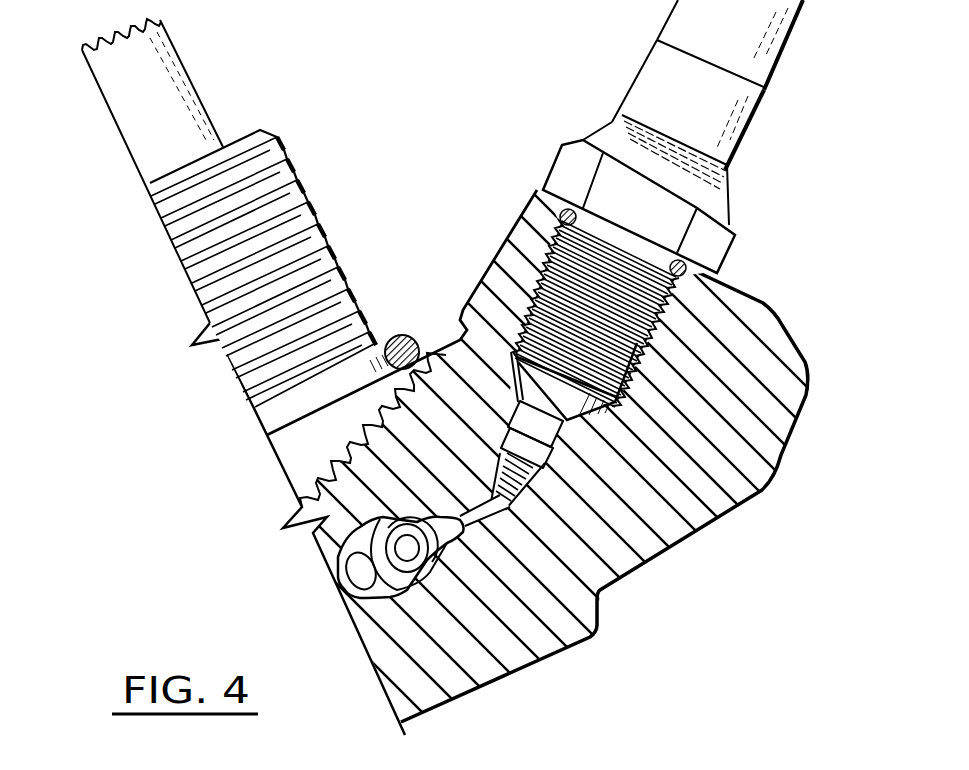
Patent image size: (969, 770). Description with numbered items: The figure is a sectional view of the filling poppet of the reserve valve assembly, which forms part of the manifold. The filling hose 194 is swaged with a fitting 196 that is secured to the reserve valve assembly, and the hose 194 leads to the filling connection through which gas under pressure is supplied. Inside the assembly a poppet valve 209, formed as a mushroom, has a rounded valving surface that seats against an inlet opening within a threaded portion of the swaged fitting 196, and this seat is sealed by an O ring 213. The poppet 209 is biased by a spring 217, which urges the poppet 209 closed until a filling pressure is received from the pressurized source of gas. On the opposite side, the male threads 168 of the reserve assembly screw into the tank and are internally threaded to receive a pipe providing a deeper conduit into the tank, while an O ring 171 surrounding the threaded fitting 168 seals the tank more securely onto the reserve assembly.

The male threads 168 is at (290, 160).
The O Ring 171 is at (412, 335).
The hose 194 is at (787, 33).
The fitting 196 is at (745, 117).
The poppet valve 209 is at (567, 432).
The O Ring 213 is at (688, 280).
The spring 217 is at (526, 494).